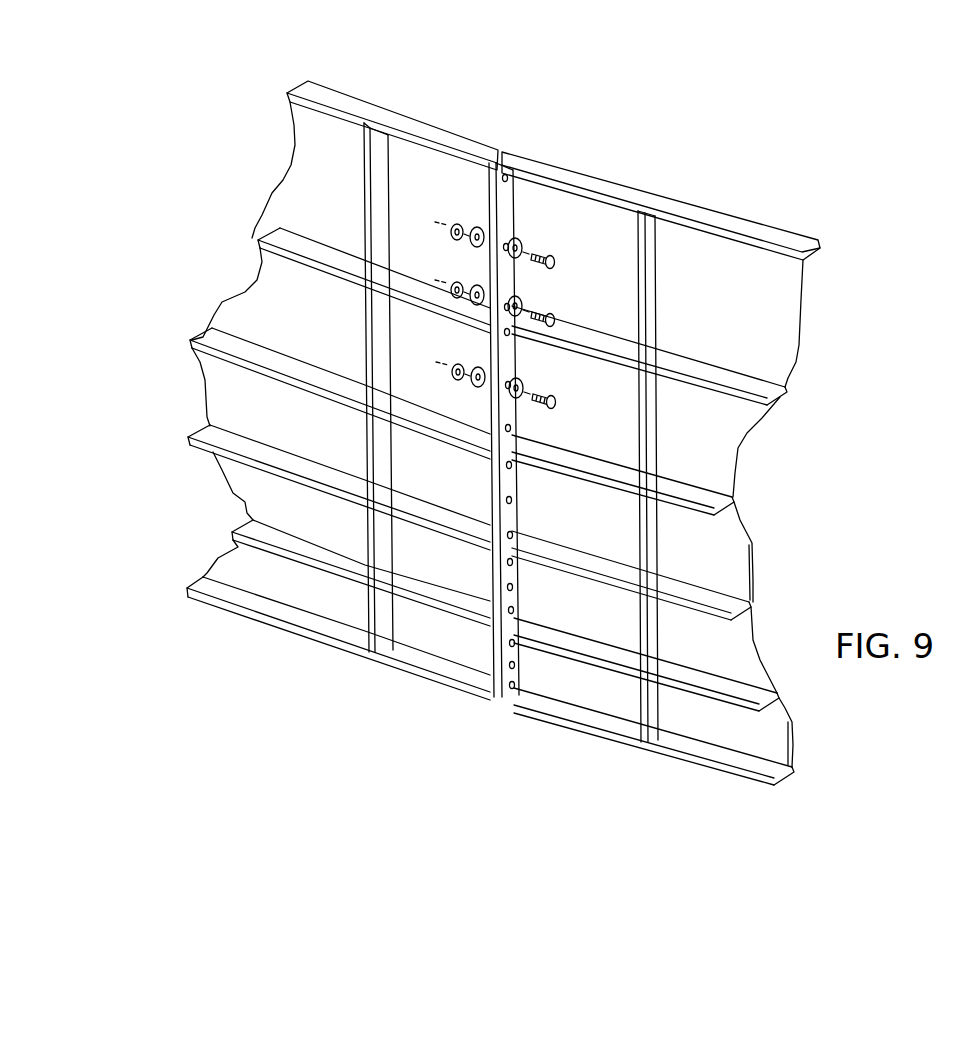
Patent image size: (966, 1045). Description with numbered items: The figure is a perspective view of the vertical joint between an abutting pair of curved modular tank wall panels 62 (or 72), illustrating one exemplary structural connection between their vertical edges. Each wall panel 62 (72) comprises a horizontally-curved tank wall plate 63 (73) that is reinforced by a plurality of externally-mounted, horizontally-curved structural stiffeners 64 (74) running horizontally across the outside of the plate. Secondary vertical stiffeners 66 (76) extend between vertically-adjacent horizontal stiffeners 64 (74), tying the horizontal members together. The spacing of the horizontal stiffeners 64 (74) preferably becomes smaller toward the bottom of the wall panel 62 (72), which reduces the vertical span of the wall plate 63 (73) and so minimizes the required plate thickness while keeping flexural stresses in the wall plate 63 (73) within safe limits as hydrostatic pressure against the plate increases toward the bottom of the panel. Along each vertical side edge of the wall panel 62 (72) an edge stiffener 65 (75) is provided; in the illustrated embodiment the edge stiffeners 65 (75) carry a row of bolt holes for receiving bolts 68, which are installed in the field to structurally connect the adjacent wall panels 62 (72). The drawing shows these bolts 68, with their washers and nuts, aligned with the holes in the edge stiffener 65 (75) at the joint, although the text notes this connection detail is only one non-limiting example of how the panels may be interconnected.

The tank wall panel 62 is at (408, 107).
The tank wall panel 72 is at (553, 170).
The tank wall plate 63 is at (315, 177).
The tank wall plate 73 is at (378, 387).
The horizontal structural stiffener 64 is at (237, 442).
The horizontal structural stiffener 74 is at (490, 506).
The edge stiffener 65 is at (512, 675).
The edge stiffener 75 is at (504, 430).
The secondary vertical stiffener 66 is at (650, 328).
The secondary vertical stiffener 76 is at (648, 476).
The bolt 68 is at (552, 254).